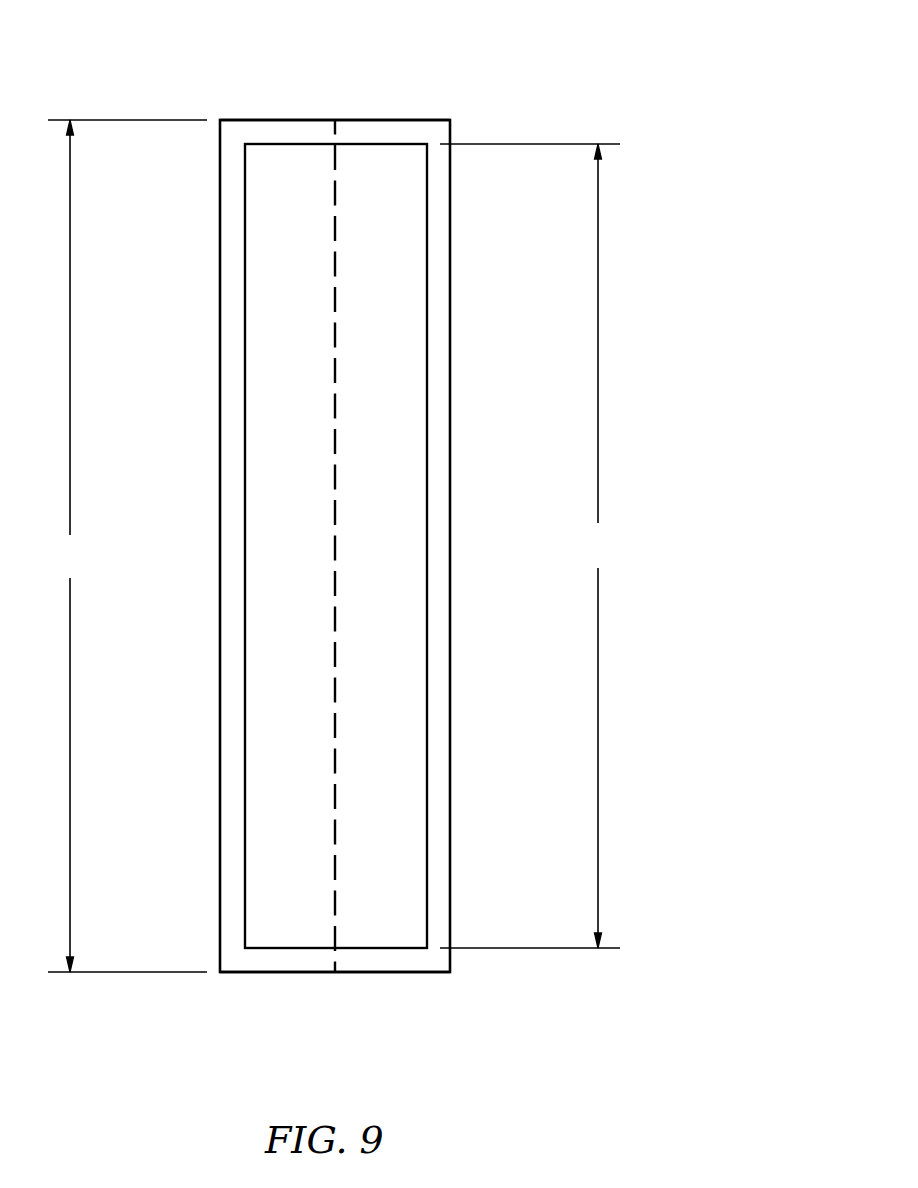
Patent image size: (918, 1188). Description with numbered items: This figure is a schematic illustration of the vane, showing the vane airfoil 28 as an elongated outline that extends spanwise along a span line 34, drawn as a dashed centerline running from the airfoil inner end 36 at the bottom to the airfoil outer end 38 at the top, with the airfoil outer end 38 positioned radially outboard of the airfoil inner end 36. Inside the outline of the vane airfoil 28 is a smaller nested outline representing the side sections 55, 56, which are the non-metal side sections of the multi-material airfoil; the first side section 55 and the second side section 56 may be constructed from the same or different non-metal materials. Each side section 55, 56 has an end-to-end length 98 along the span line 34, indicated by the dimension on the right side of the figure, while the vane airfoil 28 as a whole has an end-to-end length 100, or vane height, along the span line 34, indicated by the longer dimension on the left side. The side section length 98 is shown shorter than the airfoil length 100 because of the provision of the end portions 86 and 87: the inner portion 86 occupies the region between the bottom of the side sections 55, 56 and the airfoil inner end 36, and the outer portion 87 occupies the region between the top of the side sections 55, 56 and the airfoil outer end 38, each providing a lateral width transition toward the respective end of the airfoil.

The vane airfoil 28 is at (399, 492).
The span line 34 is at (335, 510).
The airfoil inner end 36 is at (322, 975).
The airfoil outer end 38 is at (352, 118).
The first side section 55 is at (430, 413).
The second side section 56 is at (336, 546).
The intermediate segment inner portion 86 is at (236, 958).
The intermediate segment outer portion 87 is at (236, 137).
The side section end-to-end length 98 is at (530, 546).
The airfoil end-to-end length 100 is at (127, 546).